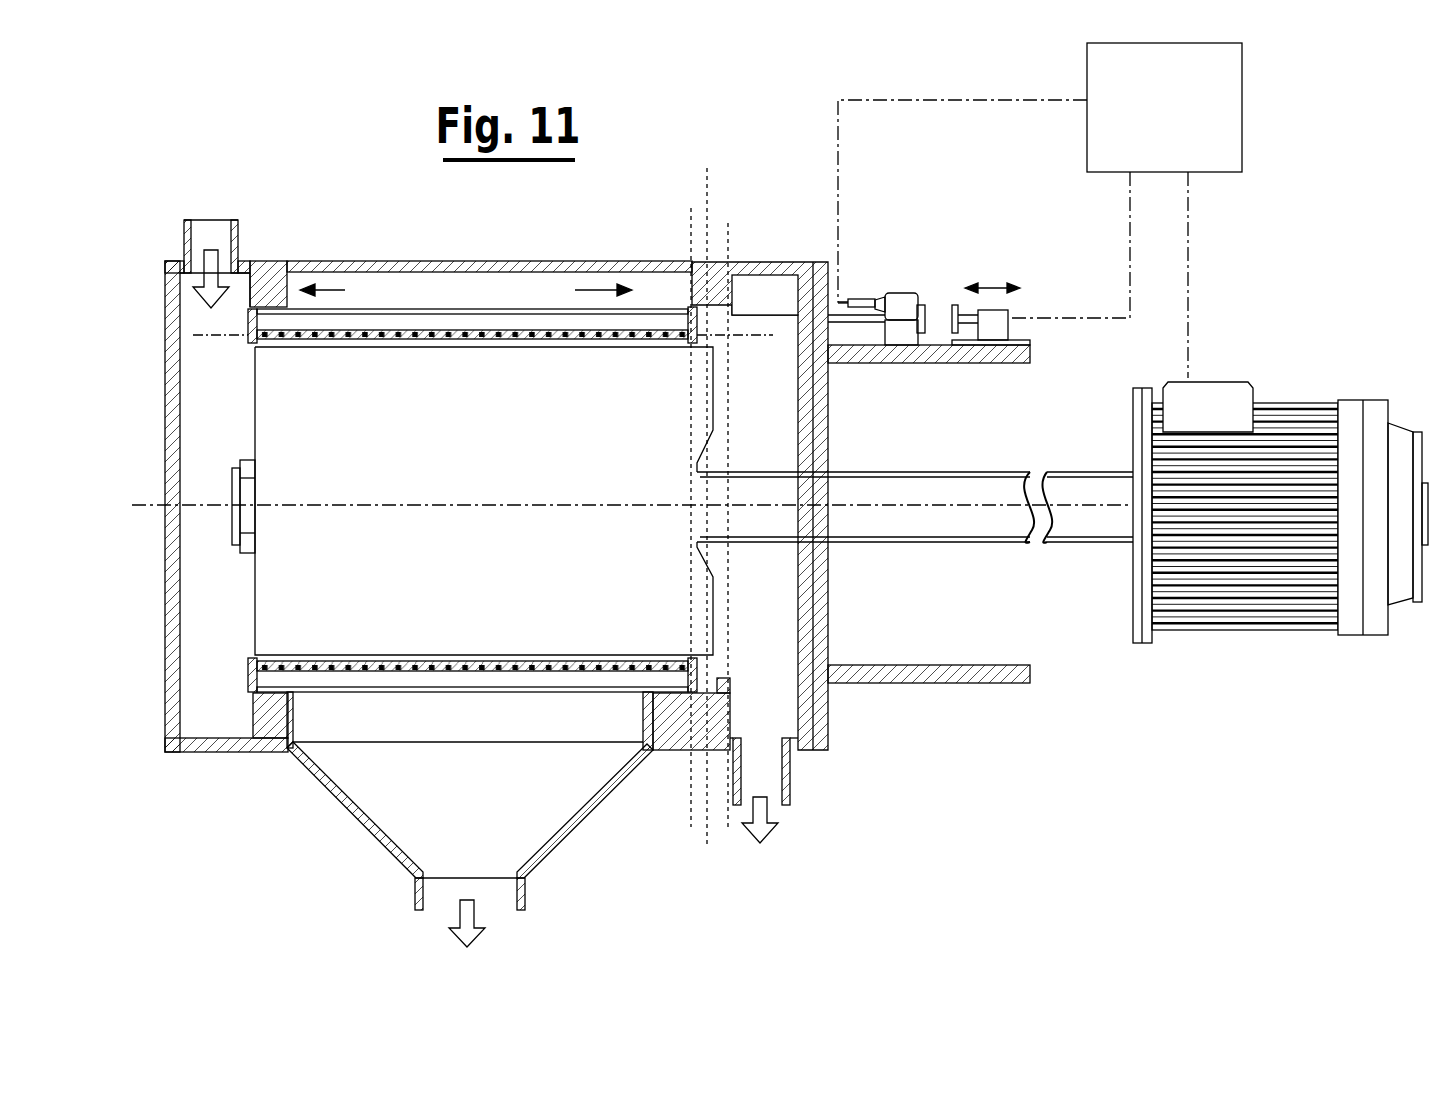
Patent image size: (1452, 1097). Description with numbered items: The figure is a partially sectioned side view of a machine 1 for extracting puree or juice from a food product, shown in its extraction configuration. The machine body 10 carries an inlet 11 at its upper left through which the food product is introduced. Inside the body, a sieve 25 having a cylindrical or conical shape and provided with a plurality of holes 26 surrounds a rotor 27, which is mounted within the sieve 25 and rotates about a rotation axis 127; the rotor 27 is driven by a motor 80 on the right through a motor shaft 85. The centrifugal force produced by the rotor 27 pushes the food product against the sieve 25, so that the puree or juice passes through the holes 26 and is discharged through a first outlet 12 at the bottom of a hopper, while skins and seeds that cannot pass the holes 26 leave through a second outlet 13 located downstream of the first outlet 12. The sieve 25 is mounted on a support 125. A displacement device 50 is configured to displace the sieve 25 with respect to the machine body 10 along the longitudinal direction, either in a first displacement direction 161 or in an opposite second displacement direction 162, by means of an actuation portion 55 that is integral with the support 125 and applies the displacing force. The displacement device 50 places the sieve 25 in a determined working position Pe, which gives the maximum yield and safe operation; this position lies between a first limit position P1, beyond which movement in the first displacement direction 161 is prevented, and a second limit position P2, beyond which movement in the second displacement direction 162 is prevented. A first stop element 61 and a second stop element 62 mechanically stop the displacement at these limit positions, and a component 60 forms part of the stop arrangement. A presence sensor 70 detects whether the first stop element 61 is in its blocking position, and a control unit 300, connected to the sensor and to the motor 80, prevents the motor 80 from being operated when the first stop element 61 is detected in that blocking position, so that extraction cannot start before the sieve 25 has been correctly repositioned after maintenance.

The machine 1 is at (1265, 716).
The machine body 10 is at (438, 262).
The inlet 11 is at (212, 205).
The first outlet 12 is at (443, 905).
The second outlet 13 is at (778, 832).
The sieve 25 is at (253, 585).
The holes 26 is at (557, 670).
The rotor 27 is at (233, 403).
The displacement device 50 is at (1008, 242).
The actuation portion 55 is at (768, 300).
The adjusting unit 60 is at (1023, 327).
The first stop element 61 is at (900, 293).
The second stop element 62 is at (948, 305).
The presence sensor 70 is at (860, 298).
The motor 80 is at (1286, 385).
The motor shaft 85 is at (975, 543).
The support 125 is at (230, 682).
The rotation axis 127 is at (148, 498).
The first displacement direction 161 is at (336, 286).
The second displacement direction 162 is at (603, 286).
The control unit 300 is at (1250, 95).
The first limit position P1 is at (687, 506).
The second limit position P2 is at (733, 513).
The working position Pe is at (710, 494).